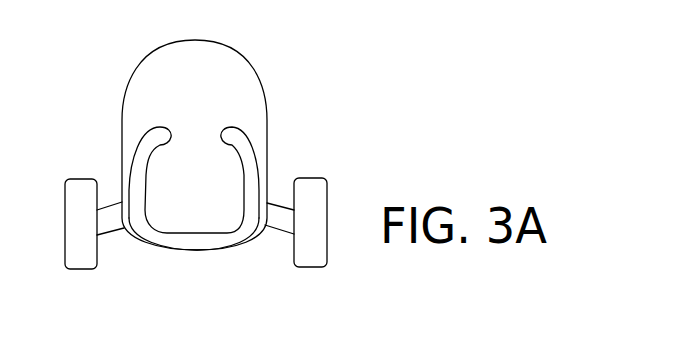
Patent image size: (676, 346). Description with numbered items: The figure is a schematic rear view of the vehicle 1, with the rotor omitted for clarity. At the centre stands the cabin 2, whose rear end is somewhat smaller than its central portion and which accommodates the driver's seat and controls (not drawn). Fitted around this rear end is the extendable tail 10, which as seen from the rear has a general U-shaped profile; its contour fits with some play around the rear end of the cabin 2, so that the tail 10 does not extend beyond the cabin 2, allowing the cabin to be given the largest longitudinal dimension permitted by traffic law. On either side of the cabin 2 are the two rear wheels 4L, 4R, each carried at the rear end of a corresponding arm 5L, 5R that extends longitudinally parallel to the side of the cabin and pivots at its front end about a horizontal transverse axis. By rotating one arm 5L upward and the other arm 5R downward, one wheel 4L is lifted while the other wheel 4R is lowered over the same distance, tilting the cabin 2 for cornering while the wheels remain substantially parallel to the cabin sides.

The vehicle 1 is at (93, 50).
The cabin 2 is at (247, 63).
The extendable tail 10 is at (242, 129).
The left-hand rear wheel 4L is at (82, 179).
The right-hand rear wheel 4R is at (310, 178).
The left-hand arm 5L is at (118, 236).
The right-hand arm 5R is at (275, 234).